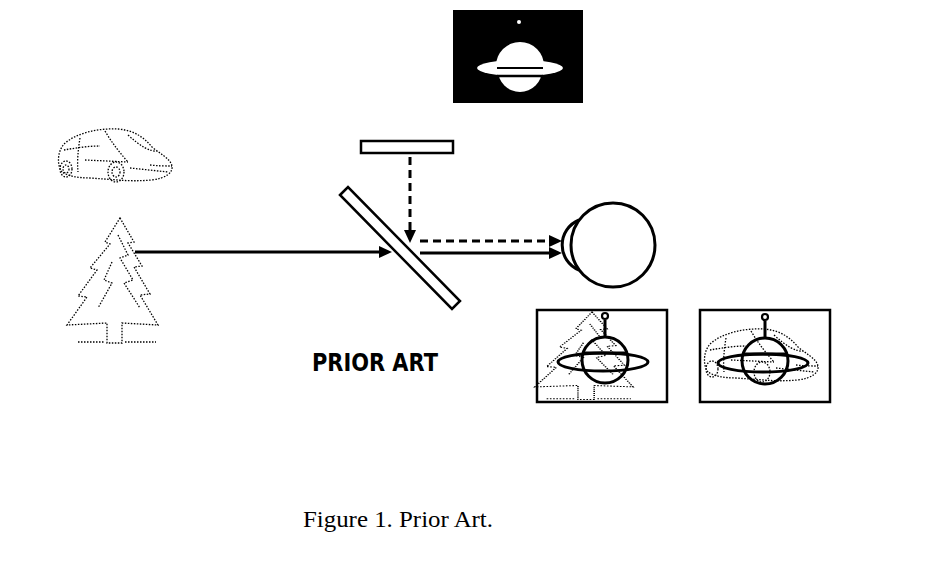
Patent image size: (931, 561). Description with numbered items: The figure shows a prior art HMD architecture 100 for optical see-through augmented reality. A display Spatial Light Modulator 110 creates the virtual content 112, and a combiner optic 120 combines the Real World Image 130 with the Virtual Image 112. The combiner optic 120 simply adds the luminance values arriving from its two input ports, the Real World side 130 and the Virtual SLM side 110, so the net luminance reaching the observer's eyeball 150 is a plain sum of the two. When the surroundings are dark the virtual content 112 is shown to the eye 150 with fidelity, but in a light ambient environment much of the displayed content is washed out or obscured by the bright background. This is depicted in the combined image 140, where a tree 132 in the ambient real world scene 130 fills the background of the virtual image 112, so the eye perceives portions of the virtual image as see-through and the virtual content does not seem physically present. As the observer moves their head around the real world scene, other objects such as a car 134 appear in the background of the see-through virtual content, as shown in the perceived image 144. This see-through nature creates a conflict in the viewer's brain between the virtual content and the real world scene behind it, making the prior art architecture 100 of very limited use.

The prior art HMD architecture 100 is at (237, 55).
The display Spatial Light Modulator 110 is at (367, 139).
The virtual content 112 is at (453, 22).
The combiner optic 120 is at (338, 195).
The real world image 130 is at (141, 258).
The tree 132 is at (155, 315).
The car 134 is at (102, 127).
The combined image 140 is at (647, 403).
The perceived image 144 is at (810, 403).
The eyeball 150 is at (603, 202).